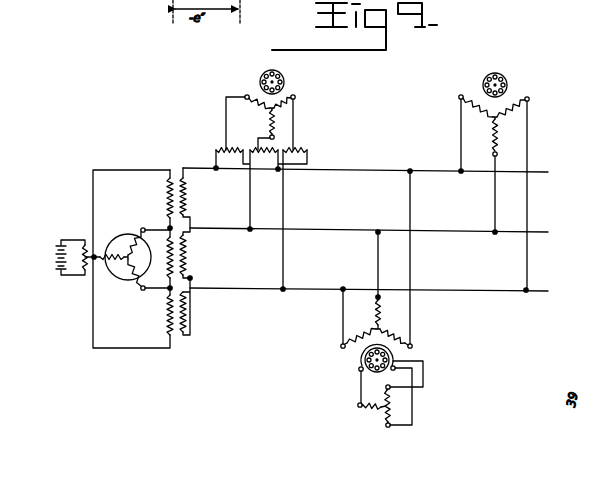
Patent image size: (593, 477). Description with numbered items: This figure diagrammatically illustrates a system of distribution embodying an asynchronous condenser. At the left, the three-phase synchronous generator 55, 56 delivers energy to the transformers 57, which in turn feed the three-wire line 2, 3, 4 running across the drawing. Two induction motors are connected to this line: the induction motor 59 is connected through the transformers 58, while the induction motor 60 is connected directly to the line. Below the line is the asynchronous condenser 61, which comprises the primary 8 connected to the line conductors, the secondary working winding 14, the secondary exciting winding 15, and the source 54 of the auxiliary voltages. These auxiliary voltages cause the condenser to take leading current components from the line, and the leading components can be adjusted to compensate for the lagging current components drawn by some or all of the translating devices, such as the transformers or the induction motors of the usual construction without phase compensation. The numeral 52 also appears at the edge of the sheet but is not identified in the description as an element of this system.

The line 2 is at (371, 172).
The line 3 is at (375, 233).
The line 4 is at (375, 292).
The primary 8 is at (385, 311).
The secondary working winding 14 is at (365, 361).
The secondary exciting winding 15 is at (369, 372).
The part of adjacent figure 52 is at (587, 6).
The source of the auxiliary voltages 54 is at (374, 407).
The three-phase synchronous generator 55 is at (120, 281).
The three-phase synchronous generator 56 is at (75, 269).
The transformers 57 is at (174, 338).
The transformers 58 is at (272, 220).
The induction motor 59 is at (268, 110).
The induction motor 60 is at (487, 182).
The asynchronous condenser 61 is at (414, 366).